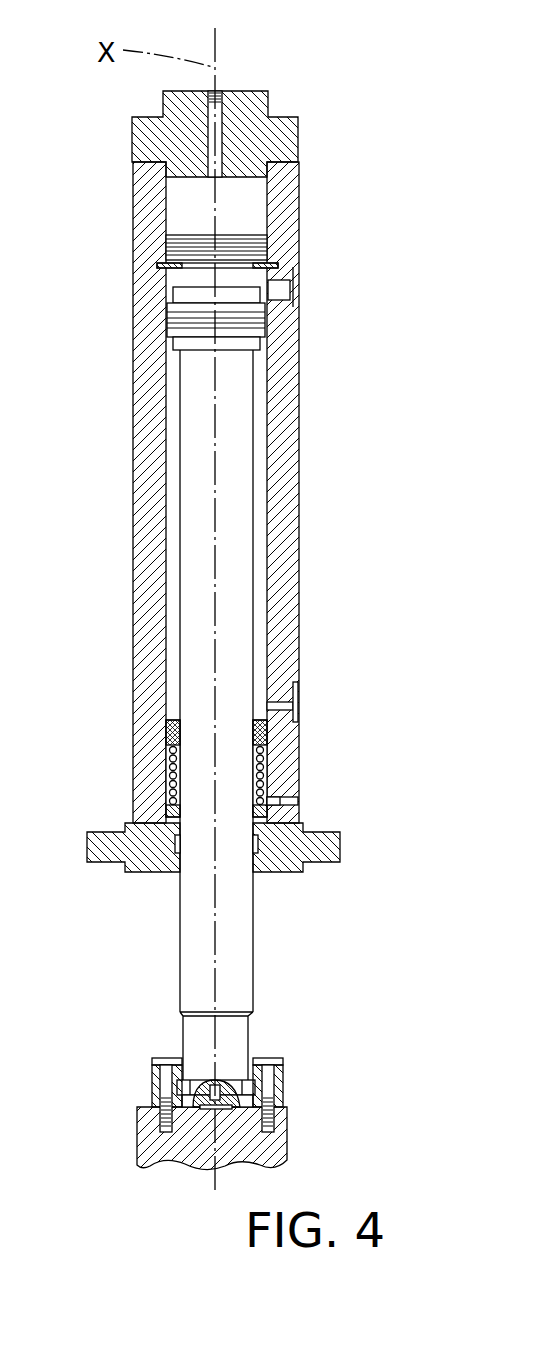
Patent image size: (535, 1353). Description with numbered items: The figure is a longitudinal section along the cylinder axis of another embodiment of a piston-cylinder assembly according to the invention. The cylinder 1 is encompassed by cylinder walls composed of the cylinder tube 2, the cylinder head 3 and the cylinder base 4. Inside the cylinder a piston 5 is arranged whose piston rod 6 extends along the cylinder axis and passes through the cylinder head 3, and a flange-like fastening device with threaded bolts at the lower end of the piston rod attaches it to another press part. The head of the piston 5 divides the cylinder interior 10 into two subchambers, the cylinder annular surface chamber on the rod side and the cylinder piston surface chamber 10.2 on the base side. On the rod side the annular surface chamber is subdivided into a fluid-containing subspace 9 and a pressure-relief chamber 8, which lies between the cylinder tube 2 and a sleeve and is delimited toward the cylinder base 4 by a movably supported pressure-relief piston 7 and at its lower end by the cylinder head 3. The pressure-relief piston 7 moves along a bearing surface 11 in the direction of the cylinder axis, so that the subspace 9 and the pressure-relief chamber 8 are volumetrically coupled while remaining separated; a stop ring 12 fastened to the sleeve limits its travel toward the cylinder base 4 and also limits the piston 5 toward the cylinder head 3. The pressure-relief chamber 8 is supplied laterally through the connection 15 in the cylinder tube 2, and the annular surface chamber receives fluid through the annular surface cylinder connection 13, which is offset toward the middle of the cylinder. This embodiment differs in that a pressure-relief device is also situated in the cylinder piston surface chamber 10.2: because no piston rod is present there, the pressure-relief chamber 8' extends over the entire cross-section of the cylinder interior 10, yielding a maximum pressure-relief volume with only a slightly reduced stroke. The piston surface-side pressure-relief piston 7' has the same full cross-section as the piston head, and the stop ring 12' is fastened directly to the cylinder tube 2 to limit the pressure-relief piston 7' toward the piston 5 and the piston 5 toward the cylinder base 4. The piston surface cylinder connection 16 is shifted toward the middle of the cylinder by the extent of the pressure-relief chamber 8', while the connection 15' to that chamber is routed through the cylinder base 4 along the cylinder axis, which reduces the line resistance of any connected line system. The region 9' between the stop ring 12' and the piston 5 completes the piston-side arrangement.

The cylinder 1 is at (145, 197).
The cylinder tube 2 is at (285, 228).
The cylinder head 3 is at (332, 843).
The cylinder base 4 is at (290, 138).
The piston 5 is at (255, 329).
The piston rod 6 is at (237, 437).
The pressure-relief piston 7 is at (327, 758).
The piston surface-side pressure-relief piston 7' is at (171, 231).
The pressure-relief chamber 8 is at (324, 771).
The pressure-relief chamber 8' is at (265, 202).
The subspace 9 is at (270, 535).
The intermediate chamber 9' is at (167, 287).
The cylinder interior 10 is at (250, 275).
The cylinder piston surface chamber 10.2 is at (200, 192).
The bearing surface 11 is at (170, 778).
The stop ring 12 is at (114, 756).
The stop ring 12' is at (171, 253).
The annular surface cylinder connection 13 is at (285, 700).
The connection 15 is at (340, 792).
The connection 15' is at (263, 81).
The piston surface cylinder connection 16 is at (285, 290).